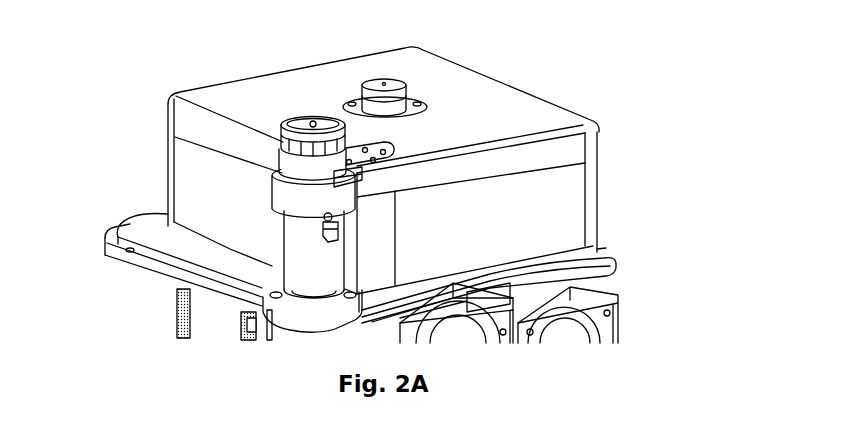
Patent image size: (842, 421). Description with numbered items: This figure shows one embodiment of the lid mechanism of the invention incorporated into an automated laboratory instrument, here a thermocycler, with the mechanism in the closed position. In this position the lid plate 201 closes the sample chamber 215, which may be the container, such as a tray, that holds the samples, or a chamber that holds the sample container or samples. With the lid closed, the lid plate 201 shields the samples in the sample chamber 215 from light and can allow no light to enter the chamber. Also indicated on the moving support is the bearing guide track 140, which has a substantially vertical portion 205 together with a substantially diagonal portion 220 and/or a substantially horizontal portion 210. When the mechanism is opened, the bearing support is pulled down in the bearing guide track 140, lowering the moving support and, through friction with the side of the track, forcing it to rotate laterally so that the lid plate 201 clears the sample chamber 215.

The lid plate 201 is at (465, 78).
The sample chamber 215 is at (560, 209).
The substantially vertical portion 205 is at (324, 217).
The bearing guide track 140 is at (335, 257).
The substantially diagonal portion 220 is at (330, 233).
The substantially horizontal portion 210 is at (345, 237).